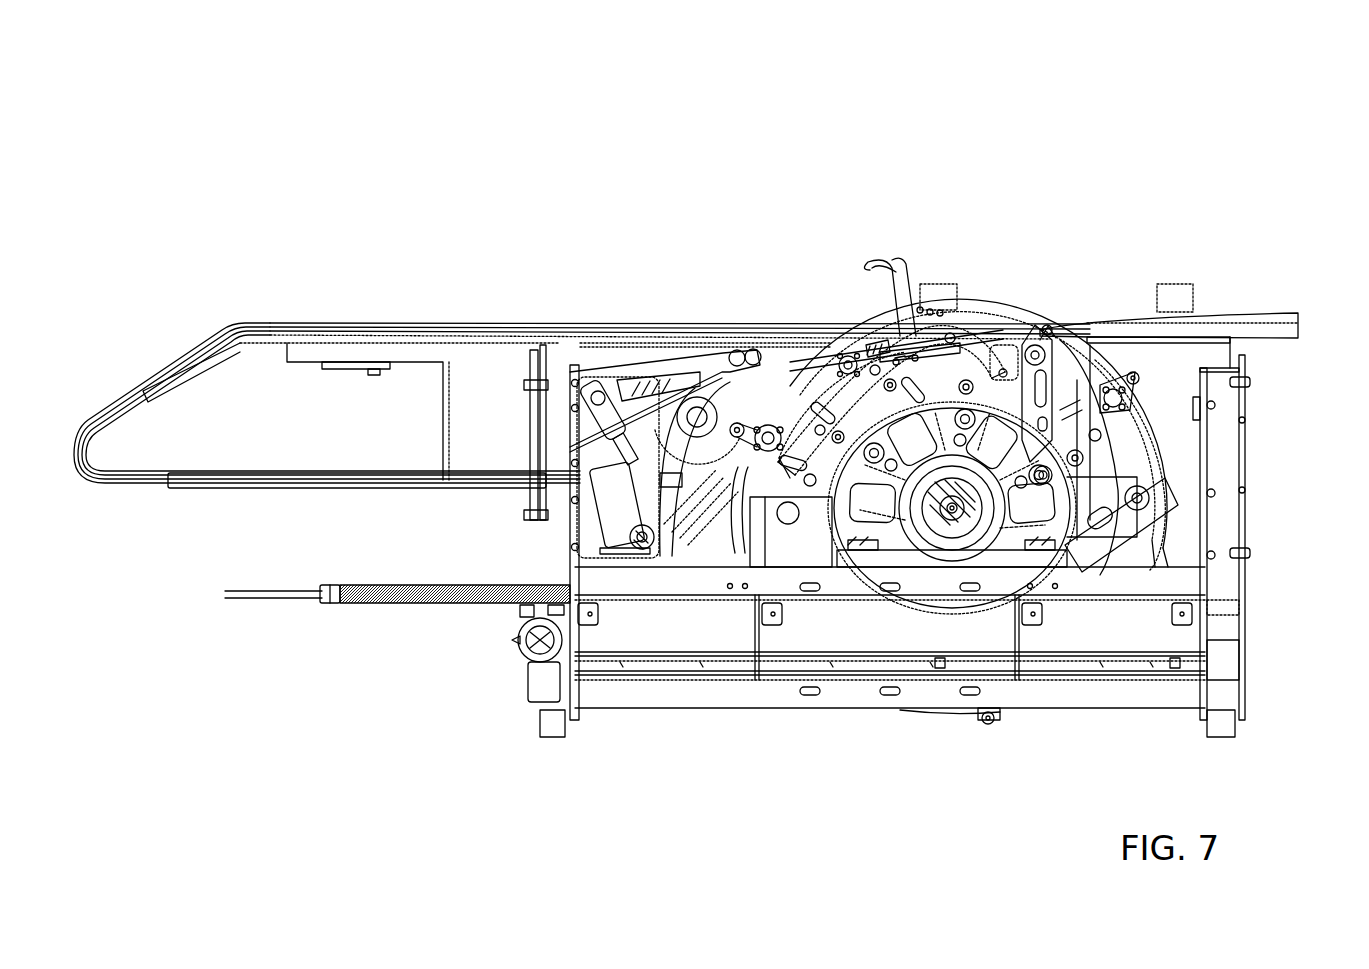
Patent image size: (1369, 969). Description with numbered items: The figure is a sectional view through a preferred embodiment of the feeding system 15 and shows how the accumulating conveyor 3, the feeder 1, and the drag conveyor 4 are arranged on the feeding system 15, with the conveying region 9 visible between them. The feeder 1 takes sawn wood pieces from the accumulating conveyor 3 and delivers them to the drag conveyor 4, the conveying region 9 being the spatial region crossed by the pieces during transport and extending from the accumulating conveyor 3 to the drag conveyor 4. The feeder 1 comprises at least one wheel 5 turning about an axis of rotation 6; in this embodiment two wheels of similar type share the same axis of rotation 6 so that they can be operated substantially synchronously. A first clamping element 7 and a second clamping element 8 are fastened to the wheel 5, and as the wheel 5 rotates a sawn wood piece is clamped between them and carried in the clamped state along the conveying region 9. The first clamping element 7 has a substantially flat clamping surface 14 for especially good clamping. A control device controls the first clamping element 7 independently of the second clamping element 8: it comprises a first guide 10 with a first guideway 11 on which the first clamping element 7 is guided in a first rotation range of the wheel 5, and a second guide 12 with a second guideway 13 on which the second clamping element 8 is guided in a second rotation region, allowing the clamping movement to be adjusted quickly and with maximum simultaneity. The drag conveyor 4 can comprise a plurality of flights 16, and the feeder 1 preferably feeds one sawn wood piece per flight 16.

The feeder 1 is at (982, 162).
The accumulating conveyor 3 is at (583, 268).
The drag conveyor 4 is at (1273, 232).
The wheel 5 is at (997, 317).
The axis of rotation 6 is at (952, 510).
The first clamping element 7 is at (1037, 323).
The second clamping element 8 is at (903, 267).
The conveying region 9 is at (582, 143).
The first guide 10 is at (798, 447).
The first guideway 11 is at (800, 400).
The second guide 12 is at (823, 395).
The second guideway 13 is at (934, 387).
The clamping surface 14 is at (1045, 327).
The feeding system 15 is at (132, 134).
The flight 16 is at (950, 287).